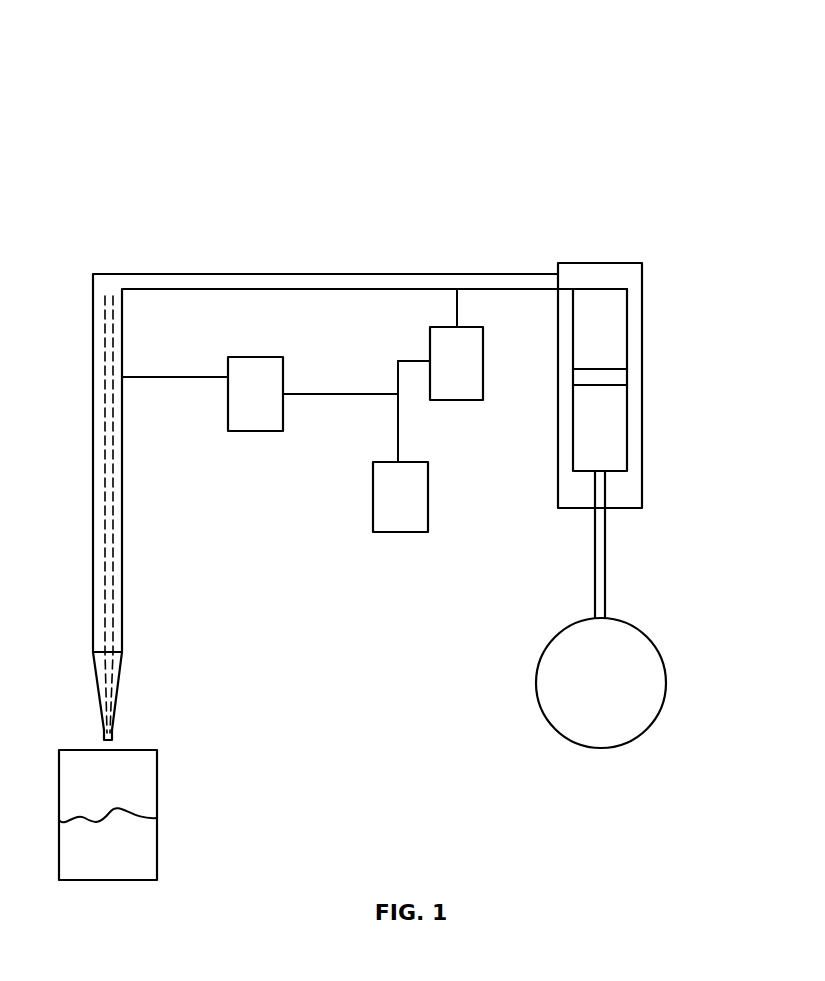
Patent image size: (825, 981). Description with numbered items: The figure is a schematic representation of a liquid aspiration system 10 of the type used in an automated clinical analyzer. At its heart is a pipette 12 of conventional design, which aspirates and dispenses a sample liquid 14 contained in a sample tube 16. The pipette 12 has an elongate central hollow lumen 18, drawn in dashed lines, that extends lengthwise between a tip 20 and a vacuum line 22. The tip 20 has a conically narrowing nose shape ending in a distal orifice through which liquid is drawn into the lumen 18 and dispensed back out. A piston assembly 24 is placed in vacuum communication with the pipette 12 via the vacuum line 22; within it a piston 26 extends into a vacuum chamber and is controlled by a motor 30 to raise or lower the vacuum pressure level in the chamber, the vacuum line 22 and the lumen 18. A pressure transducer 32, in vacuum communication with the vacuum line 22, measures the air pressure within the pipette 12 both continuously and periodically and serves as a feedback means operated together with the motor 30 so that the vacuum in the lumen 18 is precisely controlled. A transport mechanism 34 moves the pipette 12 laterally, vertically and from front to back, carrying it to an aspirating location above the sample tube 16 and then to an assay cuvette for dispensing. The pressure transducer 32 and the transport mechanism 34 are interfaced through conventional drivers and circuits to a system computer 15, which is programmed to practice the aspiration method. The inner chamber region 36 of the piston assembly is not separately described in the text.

The liquid aspiration system 10 is at (377, 165).
The pipette 12 is at (143, 522).
The sample liquid 14 is at (108, 838).
The system computer 15 is at (400, 497).
The sample tube 16 is at (157, 750).
The lumen 18 is at (112, 577).
The tip 20 is at (122, 682).
The vacuum line 22 is at (353, 283).
The piston assembly 24 is at (543, 513).
The piston 26 is at (605, 568).
The motor 30 is at (637, 688).
The pressure transducer 32 is at (456, 344).
The transport mechanism 34 is at (276, 409).
The cylinder 36 is at (615, 292).